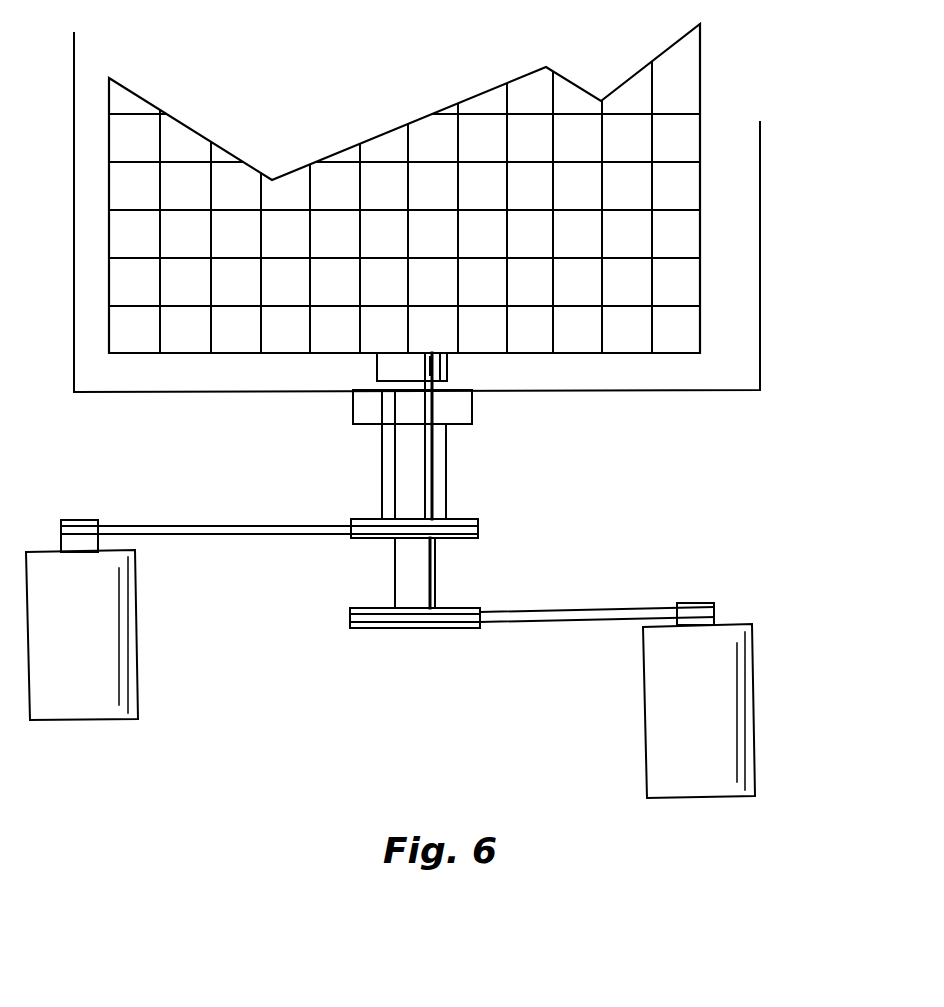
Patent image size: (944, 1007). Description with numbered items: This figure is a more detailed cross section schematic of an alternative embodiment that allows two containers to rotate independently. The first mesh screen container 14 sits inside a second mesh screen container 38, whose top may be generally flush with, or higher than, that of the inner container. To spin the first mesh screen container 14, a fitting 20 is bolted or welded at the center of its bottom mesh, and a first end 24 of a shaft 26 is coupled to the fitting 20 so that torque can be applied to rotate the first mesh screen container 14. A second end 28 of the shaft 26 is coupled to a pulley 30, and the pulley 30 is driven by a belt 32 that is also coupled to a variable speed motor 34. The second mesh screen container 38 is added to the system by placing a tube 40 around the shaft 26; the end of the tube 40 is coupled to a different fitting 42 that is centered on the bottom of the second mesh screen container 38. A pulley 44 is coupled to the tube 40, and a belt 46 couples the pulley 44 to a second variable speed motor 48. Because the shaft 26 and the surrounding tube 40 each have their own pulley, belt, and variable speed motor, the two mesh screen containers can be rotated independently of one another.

The first mesh screen container 14 is at (702, 232).
The second mesh screen container 38 is at (760, 308).
The fitting 20 is at (447, 363).
The fitting 42 is at (353, 403).
The first end 24 is at (433, 400).
The tube 40 is at (446, 475).
The shaft 26 is at (440, 540).
The pulley 44 is at (365, 540).
The second end 28 is at (436, 570).
The pulley 30 is at (470, 597).
The belt 46 is at (210, 537).
The second variable speed motor 48 is at (138, 672).
The belt 32 is at (520, 626).
The variable speed motor 34 is at (755, 668).